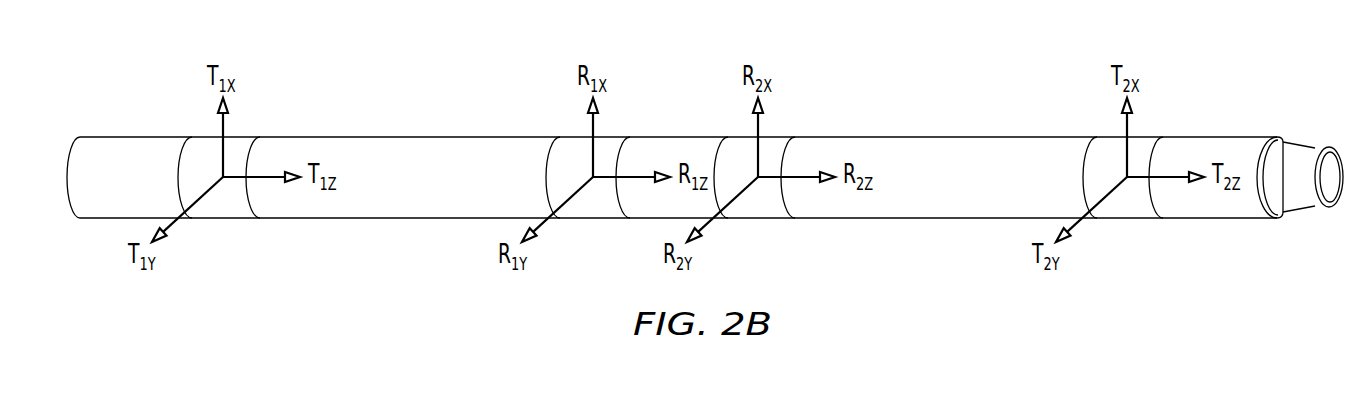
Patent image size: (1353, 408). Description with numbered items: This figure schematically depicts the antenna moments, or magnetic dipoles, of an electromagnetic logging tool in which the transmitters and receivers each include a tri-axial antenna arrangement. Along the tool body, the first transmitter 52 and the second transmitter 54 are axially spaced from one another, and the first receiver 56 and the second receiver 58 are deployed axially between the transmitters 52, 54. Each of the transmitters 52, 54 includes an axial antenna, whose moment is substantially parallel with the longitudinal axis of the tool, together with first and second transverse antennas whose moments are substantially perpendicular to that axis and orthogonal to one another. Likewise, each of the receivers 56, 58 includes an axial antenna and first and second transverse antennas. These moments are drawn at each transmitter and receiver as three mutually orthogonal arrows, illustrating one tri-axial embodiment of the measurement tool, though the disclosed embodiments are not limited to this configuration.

The first transmitter 52 is at (194, 156).
The second transmitter 54 is at (1099, 156).
The first receiver 56 is at (566, 156).
The second receiver 58 is at (730, 156).